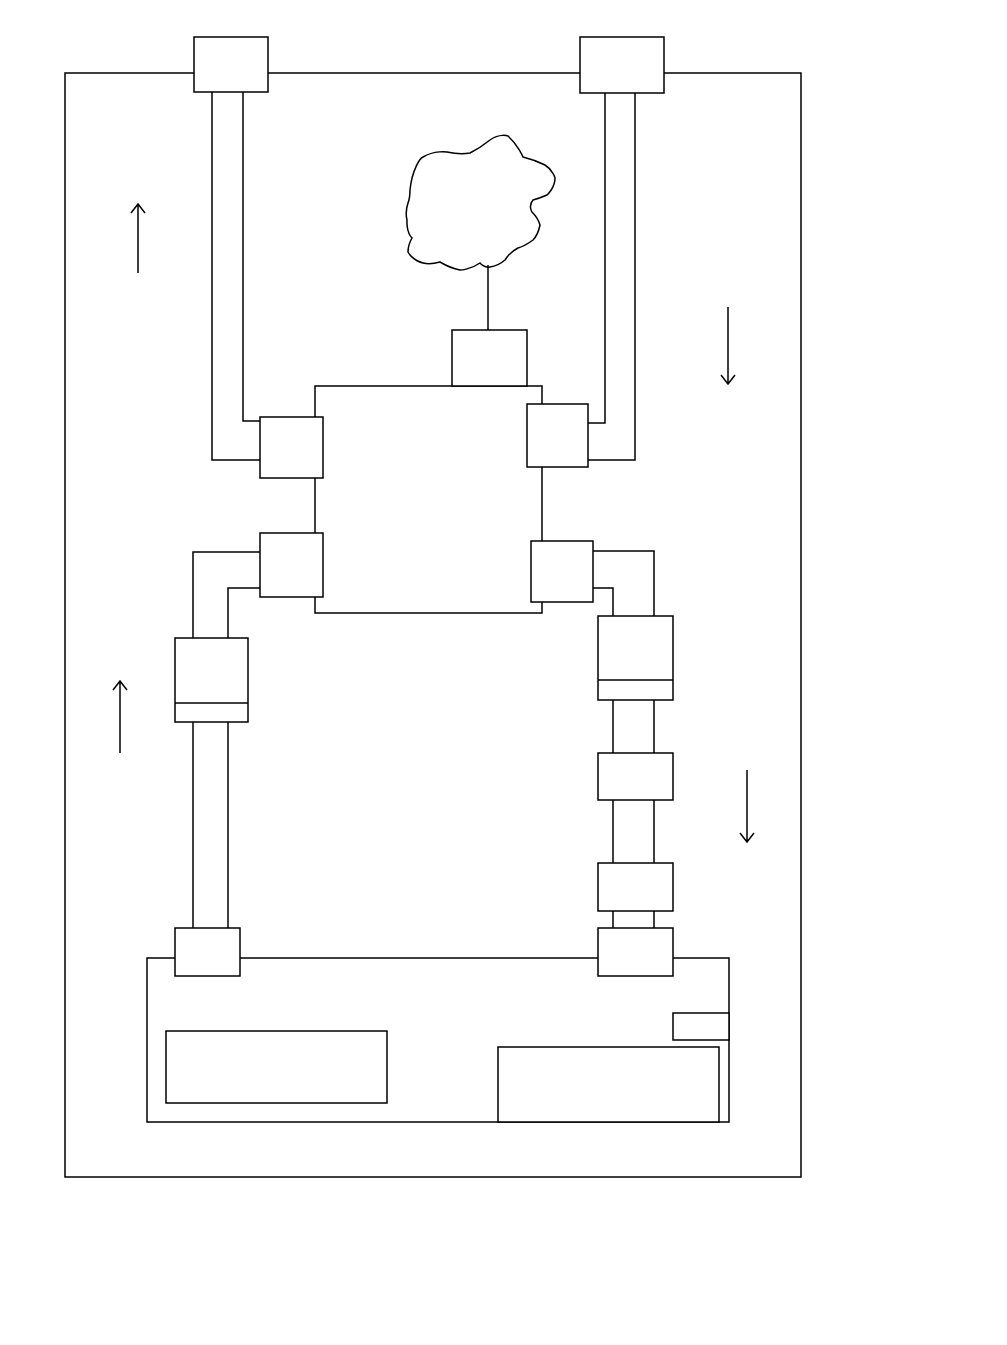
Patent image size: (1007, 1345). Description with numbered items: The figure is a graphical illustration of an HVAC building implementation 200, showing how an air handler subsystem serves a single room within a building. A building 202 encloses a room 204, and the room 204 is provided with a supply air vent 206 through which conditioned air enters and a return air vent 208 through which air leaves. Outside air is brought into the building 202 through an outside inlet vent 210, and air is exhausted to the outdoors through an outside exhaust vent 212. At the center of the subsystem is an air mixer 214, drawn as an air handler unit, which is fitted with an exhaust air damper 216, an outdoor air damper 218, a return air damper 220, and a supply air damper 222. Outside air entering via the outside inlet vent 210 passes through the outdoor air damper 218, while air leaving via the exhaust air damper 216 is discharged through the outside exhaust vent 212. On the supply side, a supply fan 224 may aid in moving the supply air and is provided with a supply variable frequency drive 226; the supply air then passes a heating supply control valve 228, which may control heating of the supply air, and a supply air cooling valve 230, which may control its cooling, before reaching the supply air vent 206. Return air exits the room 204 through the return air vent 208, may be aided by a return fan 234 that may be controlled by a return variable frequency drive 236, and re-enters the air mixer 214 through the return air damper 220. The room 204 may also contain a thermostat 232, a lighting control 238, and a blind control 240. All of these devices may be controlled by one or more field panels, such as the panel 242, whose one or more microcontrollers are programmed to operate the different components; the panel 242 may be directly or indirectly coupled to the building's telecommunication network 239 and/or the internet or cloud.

The HVAC building implementation 200 is at (727, 35).
The building 202 is at (704, 139).
The room 204 is at (448, 1079).
The supply air vent 206 is at (617, 967).
The return air vent 208 is at (189, 967).
The outside inlet vent 210 is at (604, 76).
The outside exhaust vent 212 is at (213, 76).
The air mixer 214 is at (403, 517).
The exhaust air damper 216 is at (273, 458).
The outdoor air damper 218 is at (539, 445).
The return air damper 220 is at (273, 576).
The supply air damper 222 is at (544, 582).
The supply fan 224 is at (617, 671).
The supply variable frequency drive 226 is at (613, 690).
The heating supply control valve 228 is at (635, 776).
The supply air cooling valve 230 is at (635, 887).
The thermostat 232 is at (685, 1036).
The return fan 234 is at (193, 693).
The return variable frequency drive 236 is at (235, 712).
The lighting control 238 is at (259, 1094).
The telecommunication network 239 is at (452, 215).
The blind control 240 is at (590, 1111).
The panel 242 is at (471, 370).